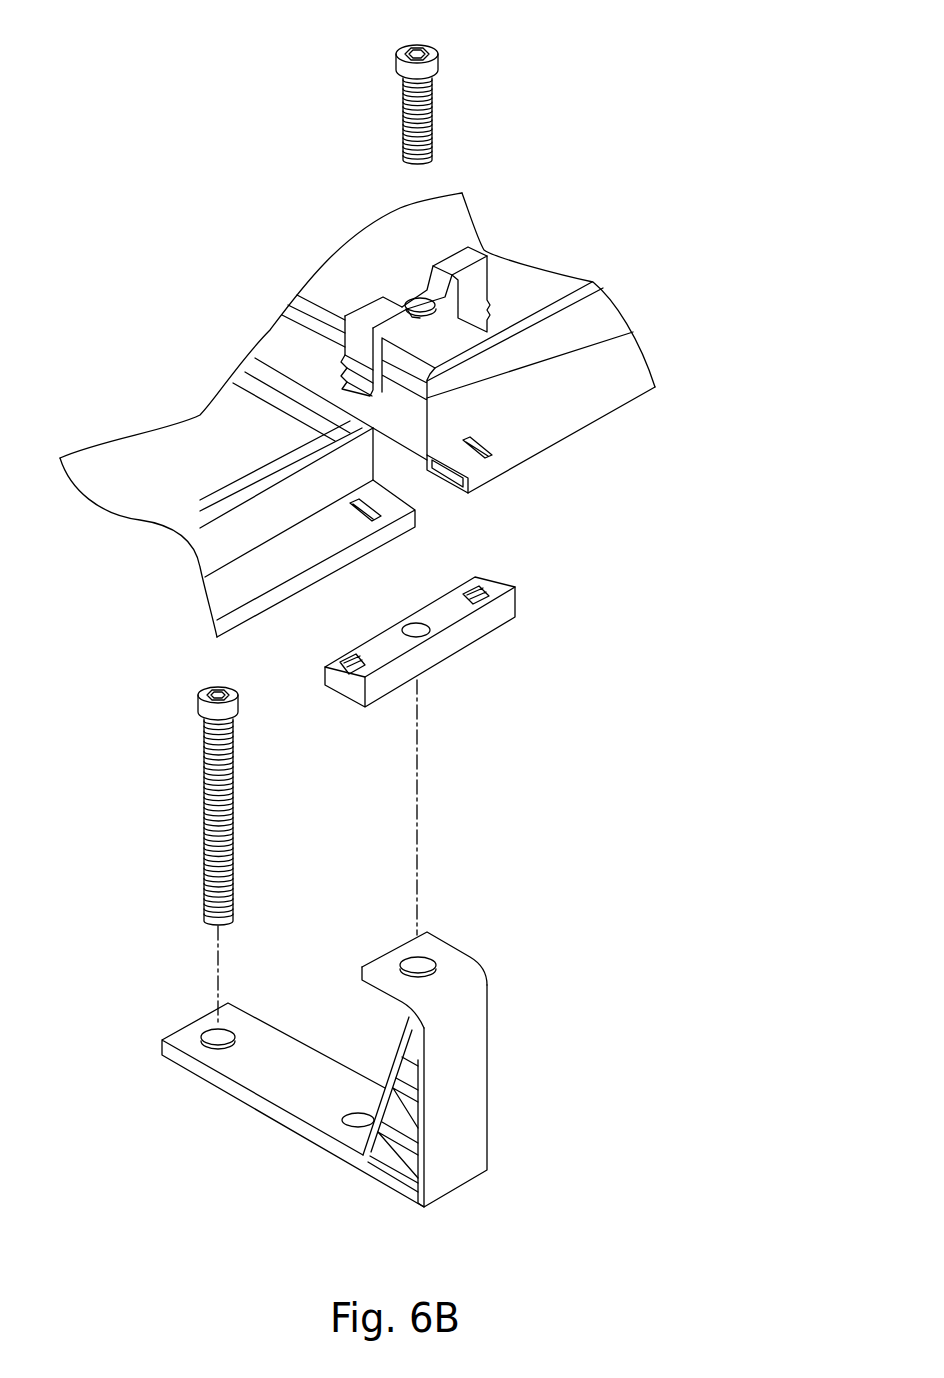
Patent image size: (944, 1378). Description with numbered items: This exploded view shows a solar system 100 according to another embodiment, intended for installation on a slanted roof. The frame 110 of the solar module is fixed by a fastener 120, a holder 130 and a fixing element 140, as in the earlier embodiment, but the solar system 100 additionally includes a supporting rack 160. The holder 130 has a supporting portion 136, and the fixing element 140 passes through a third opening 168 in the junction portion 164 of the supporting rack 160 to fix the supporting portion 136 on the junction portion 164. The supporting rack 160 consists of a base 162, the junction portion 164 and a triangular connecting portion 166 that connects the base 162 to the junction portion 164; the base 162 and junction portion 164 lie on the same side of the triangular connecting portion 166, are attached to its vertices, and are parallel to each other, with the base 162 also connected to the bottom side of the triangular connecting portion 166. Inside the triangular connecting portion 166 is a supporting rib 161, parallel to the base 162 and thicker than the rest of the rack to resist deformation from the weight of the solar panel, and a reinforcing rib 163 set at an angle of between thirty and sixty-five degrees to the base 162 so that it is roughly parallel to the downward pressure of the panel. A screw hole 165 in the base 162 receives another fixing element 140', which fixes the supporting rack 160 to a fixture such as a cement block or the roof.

The solar system 100 is at (110, 186).
The frame 110 is at (602, 318).
The fastener 120 is at (482, 247).
The holder 130 is at (462, 732).
The supporting portion 136 is at (440, 603).
The fixing element 140 is at (469, 104).
The fixing element 140' is at (169, 856).
The supporting rack 160 is at (354, 1073).
The supporting rib 161 is at (440, 1118).
The base 162 is at (264, 1094).
The reinforcing rib 163 is at (374, 1166).
The junction portion 164 is at (462, 958).
The screw hole 165 is at (210, 1030).
The triangular connecting portion 166 is at (447, 1173).
The third opening 168 is at (430, 955).